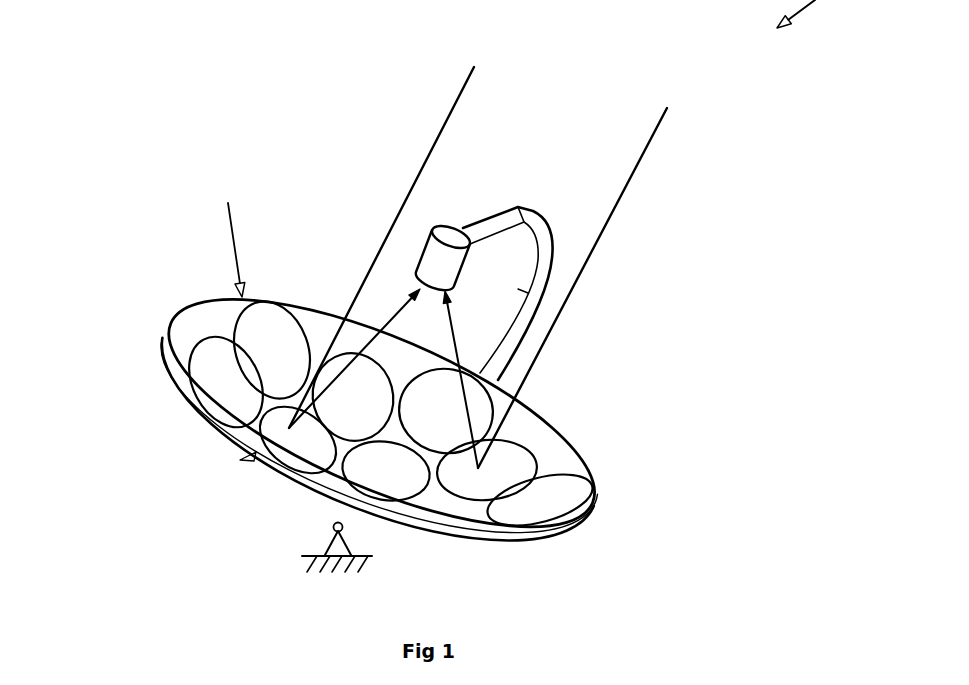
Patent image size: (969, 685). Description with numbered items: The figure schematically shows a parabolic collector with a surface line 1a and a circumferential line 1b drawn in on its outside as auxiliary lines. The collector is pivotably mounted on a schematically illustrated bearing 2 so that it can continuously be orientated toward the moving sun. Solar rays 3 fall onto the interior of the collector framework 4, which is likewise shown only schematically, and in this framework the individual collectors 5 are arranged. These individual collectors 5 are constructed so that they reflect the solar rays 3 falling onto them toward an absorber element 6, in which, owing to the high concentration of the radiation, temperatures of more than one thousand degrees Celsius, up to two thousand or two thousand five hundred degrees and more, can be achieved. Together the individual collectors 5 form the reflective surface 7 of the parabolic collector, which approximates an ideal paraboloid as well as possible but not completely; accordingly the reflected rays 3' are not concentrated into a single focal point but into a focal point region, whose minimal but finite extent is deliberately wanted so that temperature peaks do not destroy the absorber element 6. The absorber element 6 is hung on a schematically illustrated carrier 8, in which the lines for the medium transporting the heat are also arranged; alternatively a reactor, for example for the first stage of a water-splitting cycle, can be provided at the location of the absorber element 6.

The surface line 1a is at (288, 487).
The circumferential line 1b is at (397, 512).
The bearing 2 is at (333, 547).
The solar rays 3 is at (521, 267).
The reflected rays 3' is at (493, 308).
The collector framework 4 is at (240, 456).
The individual collectors 5 is at (222, 368).
The absorber element 6 is at (468, 268).
The reflective surface 7 is at (229, 239).
The carrier 8 is at (540, 207).